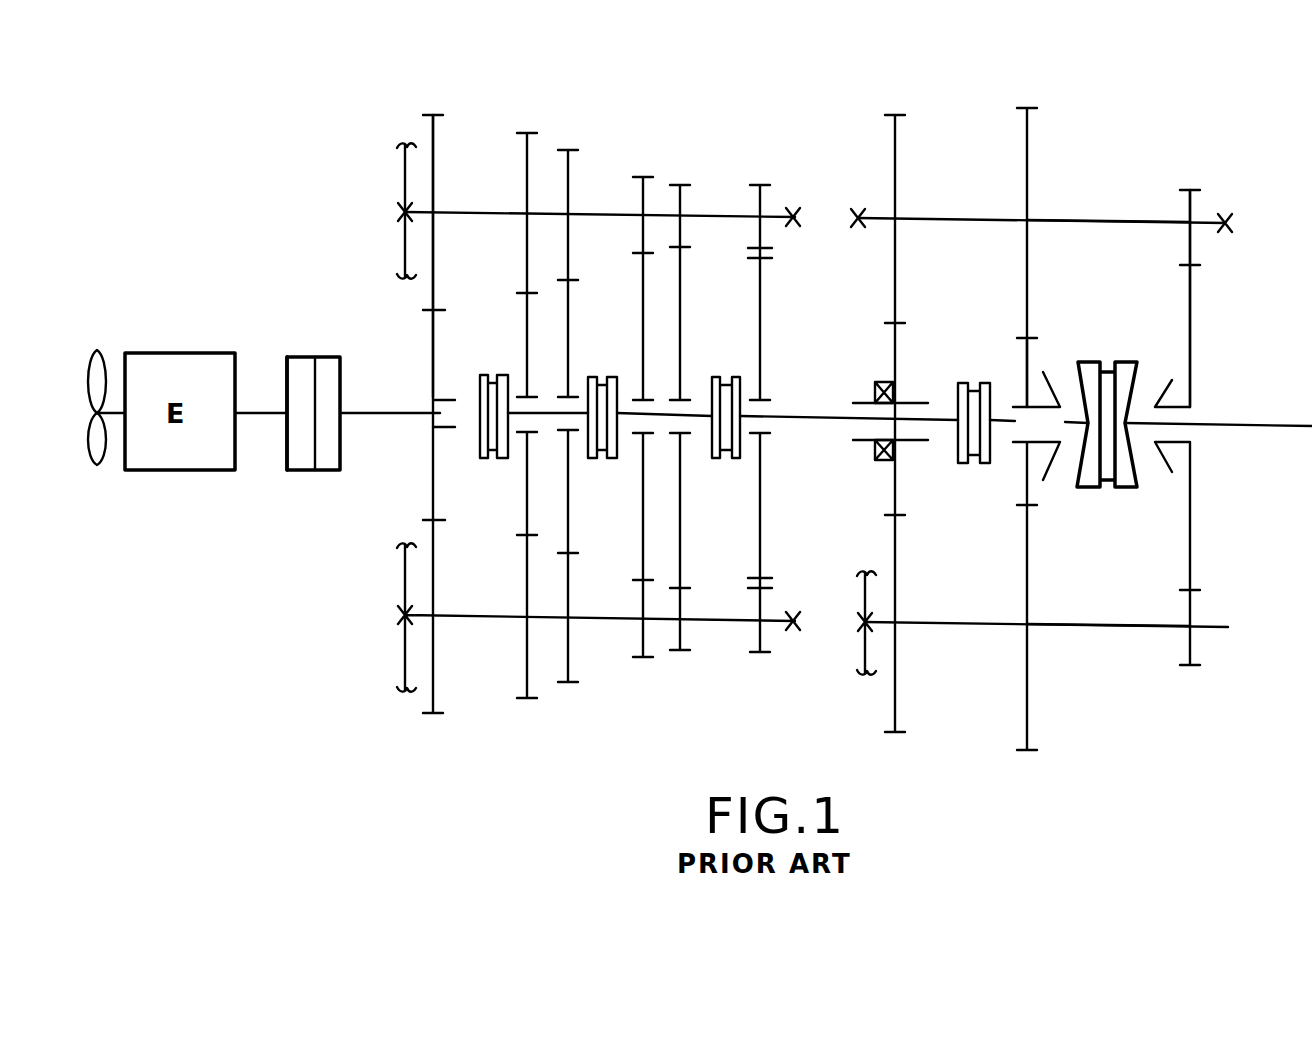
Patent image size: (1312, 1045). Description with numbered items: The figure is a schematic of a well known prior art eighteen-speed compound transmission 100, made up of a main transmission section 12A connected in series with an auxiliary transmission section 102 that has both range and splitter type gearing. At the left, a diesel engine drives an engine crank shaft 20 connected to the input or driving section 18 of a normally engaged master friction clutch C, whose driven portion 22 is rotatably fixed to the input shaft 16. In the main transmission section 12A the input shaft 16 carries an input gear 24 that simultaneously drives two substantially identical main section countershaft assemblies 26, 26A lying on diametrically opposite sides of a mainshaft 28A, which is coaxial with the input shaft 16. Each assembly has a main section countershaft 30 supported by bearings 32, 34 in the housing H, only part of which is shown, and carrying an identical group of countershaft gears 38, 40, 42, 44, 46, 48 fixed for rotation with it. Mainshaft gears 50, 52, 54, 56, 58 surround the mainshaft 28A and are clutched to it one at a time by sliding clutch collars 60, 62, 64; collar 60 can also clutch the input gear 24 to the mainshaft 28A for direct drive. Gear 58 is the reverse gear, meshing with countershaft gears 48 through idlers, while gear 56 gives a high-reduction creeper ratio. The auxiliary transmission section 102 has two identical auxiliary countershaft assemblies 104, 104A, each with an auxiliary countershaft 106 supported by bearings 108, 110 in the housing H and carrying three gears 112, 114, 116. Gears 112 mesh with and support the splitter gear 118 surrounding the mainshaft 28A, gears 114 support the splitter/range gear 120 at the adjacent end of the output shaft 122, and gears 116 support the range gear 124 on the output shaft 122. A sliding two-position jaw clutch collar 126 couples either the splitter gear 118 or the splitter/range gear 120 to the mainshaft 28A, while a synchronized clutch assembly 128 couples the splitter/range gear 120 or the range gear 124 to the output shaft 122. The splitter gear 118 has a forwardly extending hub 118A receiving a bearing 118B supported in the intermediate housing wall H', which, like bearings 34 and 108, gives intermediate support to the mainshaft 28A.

The main transmission section 12A is at (643, 379).
The input shaft 16 is at (375, 412).
The input or driving section 18 is at (300, 470).
The engine crank shaft 20 is at (262, 412).
The driven portion 22 is at (330, 470).
The input gear 24 is at (433, 345).
The main section countershaft assembly 26 is at (490, 674).
The main section countershaft assembly 26A is at (568, 157).
The mainshaft 28A is at (822, 422).
The main section countershaft 30 is at (718, 212).
The bearing 32 is at (400, 212).
The bearing 34 is at (793, 214).
The main section countershaft gear 38 is at (437, 247).
The main section countershaft gear 40 is at (527, 260).
The main section countershaft gear 42 is at (570, 247).
The main section countershaft gear 44 is at (640, 250).
The main section countershaft gear 46 is at (683, 238).
The main section countershaft gear 48 is at (765, 240).
The mainshaft gear 50 is at (525, 478).
The mainshaft gear 52 is at (570, 500).
The mainshaft gear 54 is at (643, 560).
The mainshaft gear 56 is at (683, 500).
The mainshaft gear 58 is at (763, 560).
The sliding clutch collar 60 is at (490, 376).
The sliding clutch collar 62 is at (605, 377).
The sliding clutch collar 64 is at (738, 348).
The compound transmission 100 is at (1031, 389).
The auxiliary transmission section 102 is at (1125, 423).
The auxiliary countershaft assembly 104 is at (1080, 213).
The auxiliary countershaft assembly 104A is at (1051, 670).
The auxiliary countershaft 106 is at (937, 220).
The bearing 108 is at (858, 217).
The bearing 110 is at (1228, 222).
The auxiliary section countershaft gear 112 is at (897, 138).
The auxiliary section countershaft gear 114 is at (1029, 142).
The auxiliary section countershaft gear 116 is at (1190, 196).
The splitter gear 118 is at (893, 342).
The hub 118A is at (855, 403).
The bearing 118B is at (893, 516).
The splitter/range gear 120 is at (1027, 358).
The output shaft 122 is at (1212, 428).
The range gear 124 is at (1193, 310).
The sliding two-position jaw clutch collar 126 is at (965, 465).
The synchronized clutch assembly 128 is at (1083, 345).
The master friction clutch C is at (319, 400).
The housing H is at (381, 211).
The intermediate housing wall H' is at (820, 634).